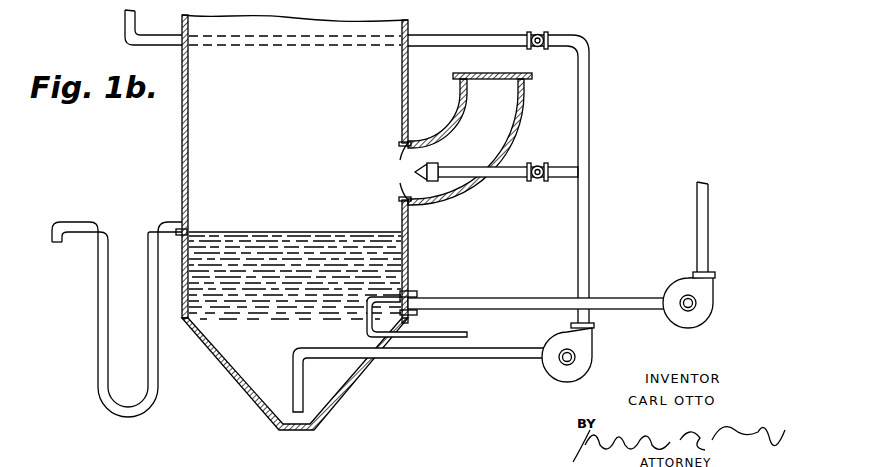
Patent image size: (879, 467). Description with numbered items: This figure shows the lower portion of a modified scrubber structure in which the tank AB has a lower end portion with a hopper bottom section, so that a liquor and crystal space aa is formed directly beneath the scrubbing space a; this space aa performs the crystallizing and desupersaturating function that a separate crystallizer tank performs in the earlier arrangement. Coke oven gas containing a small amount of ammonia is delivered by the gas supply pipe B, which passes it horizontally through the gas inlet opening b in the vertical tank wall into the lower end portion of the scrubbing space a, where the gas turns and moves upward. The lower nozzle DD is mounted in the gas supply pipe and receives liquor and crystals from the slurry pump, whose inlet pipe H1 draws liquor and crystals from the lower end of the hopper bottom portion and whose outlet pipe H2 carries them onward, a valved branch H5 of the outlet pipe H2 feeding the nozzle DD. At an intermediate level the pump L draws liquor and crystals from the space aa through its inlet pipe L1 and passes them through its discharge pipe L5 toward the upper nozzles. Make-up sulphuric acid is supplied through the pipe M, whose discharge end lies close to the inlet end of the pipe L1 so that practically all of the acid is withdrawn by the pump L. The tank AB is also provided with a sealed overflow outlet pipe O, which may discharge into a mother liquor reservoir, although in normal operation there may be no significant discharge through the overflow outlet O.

The tank AB is at (182, 147).
The scrubbing space a is at (303, 123).
The liquor and crystal space aa is at (256, 233).
The gas inlet opening b is at (405, 171).
The gas supply pipe B is at (522, 122).
The lower nozzle DD is at (436, 181).
The valved branch H5 is at (516, 178).
The outlet pipe H2 is at (586, 246).
The inlet pipe L1 is at (508, 298).
The pump L is at (708, 306).
The discharge pipe L5 is at (704, 221).
The pipe M is at (452, 337).
The inlet pipe H1 is at (455, 359).
The sealed overflow outlet pipe O is at (100, 328).